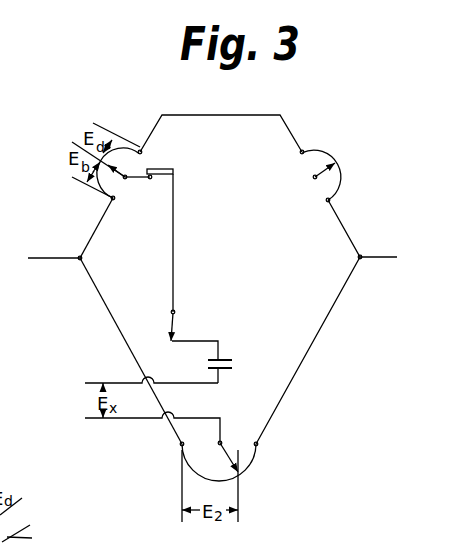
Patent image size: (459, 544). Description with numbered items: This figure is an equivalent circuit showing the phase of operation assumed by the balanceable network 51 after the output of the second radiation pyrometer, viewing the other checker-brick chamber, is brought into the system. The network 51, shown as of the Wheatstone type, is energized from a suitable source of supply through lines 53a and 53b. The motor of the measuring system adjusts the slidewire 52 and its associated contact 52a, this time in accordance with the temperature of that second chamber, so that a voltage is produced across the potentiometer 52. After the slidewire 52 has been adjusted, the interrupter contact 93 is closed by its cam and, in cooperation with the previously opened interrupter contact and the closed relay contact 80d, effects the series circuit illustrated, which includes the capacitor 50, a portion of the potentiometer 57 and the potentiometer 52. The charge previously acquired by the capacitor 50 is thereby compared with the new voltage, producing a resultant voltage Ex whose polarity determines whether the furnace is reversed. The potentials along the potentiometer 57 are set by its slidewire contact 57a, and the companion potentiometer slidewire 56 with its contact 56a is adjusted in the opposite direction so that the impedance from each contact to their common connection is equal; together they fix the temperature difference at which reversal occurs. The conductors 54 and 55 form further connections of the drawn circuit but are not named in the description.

The balanceable network 51 is at (276, 279).
The potentiometer slidewire 57 is at (140, 151).
The slidewire contact 57a is at (116, 172).
The relay contact 80d is at (170, 169).
The interrupter contact 93 is at (173, 333).
The capacitor 50 is at (223, 359).
The upper conductor line 54 is at (122, 383).
The lower conductor line 55 is at (133, 418).
The contact 52a is at (228, 455).
The slidewire 52 is at (252, 462).
The potentiometer slidewire 56 is at (342, 172).
The supply line 53a is at (52, 258).
The supply line 53b is at (375, 257).
The slidewire contact 56a is at (49, 537).